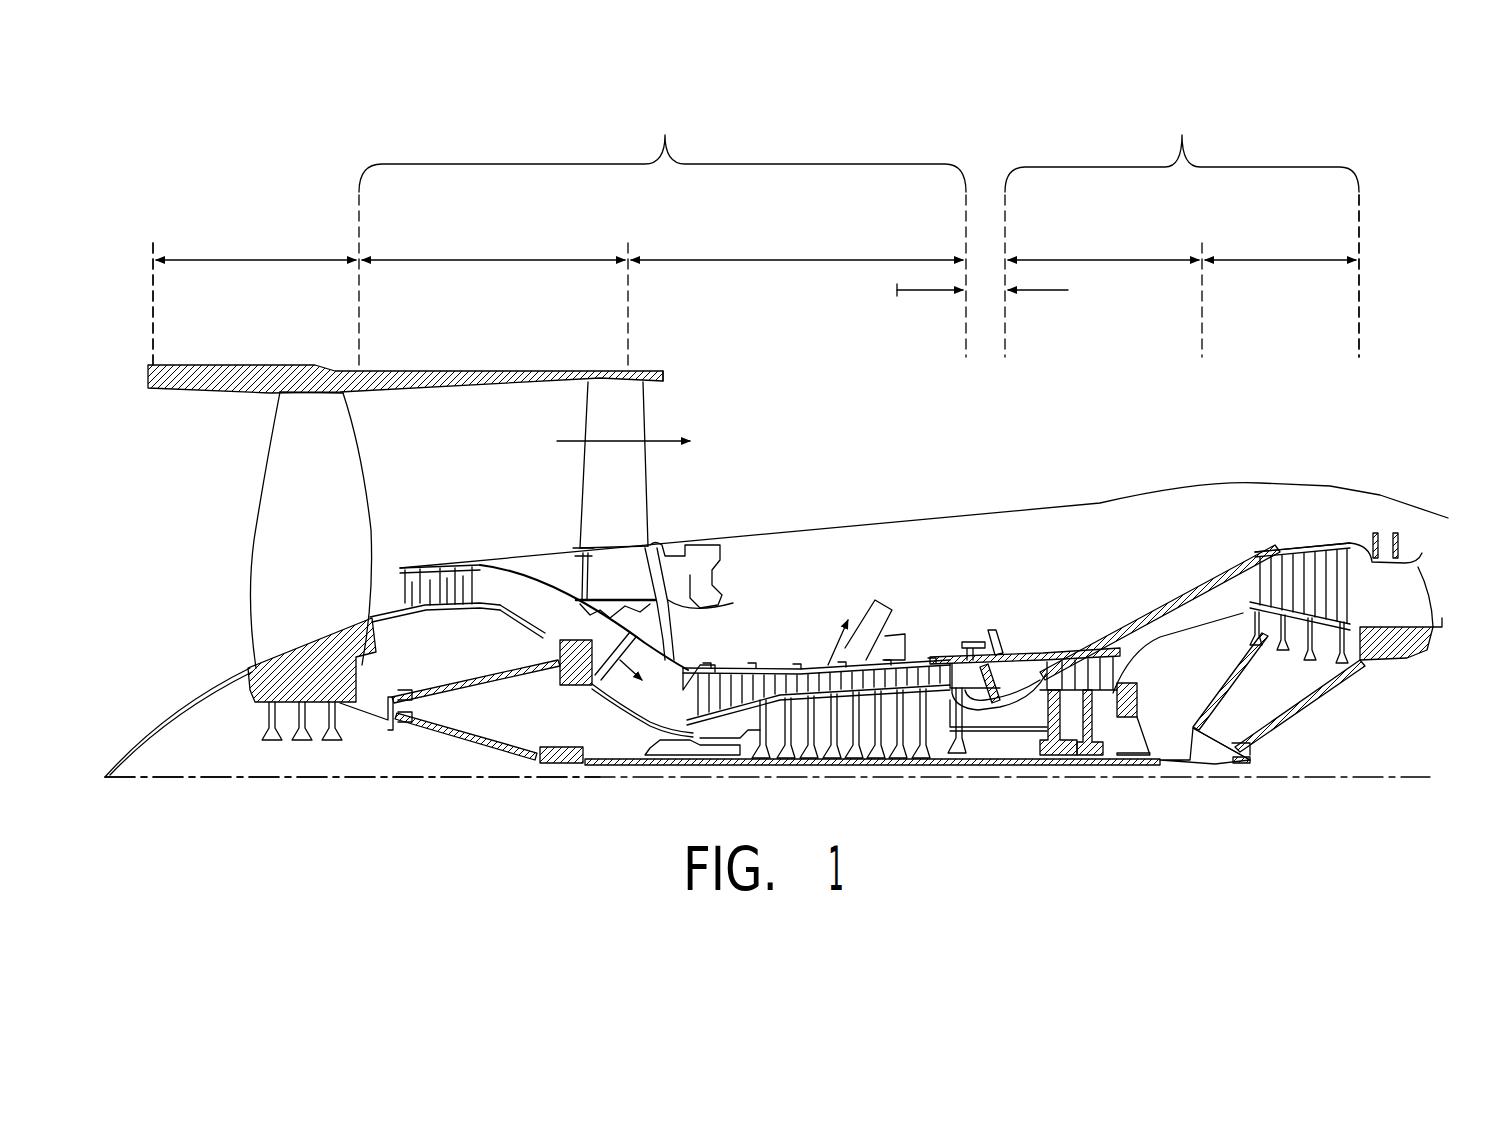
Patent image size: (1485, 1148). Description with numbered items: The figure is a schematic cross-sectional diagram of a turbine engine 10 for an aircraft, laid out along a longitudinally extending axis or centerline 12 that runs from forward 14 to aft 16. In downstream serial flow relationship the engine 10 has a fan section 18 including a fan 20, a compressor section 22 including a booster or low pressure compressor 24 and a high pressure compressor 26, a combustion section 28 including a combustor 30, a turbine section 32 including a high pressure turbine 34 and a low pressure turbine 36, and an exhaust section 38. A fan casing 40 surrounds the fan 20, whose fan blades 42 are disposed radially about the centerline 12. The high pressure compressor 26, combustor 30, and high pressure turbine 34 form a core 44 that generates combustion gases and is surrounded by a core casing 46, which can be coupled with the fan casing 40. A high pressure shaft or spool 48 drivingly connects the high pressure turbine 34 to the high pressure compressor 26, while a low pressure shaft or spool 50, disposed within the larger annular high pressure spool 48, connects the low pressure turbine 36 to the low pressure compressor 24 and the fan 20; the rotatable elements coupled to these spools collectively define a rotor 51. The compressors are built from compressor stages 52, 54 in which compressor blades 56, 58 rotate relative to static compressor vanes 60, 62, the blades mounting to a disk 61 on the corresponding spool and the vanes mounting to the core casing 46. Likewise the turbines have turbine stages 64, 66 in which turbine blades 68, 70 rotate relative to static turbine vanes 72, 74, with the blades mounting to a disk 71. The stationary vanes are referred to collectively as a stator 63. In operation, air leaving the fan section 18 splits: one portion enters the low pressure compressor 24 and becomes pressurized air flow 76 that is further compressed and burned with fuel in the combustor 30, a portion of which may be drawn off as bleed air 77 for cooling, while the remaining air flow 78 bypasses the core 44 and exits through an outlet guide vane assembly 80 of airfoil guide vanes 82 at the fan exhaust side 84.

The engine 10 is at (1372, 290).
The centerline 12 is at (235, 778).
The forward 14 is at (187, 505).
The aft 16 is at (1465, 599).
The fan section 18 is at (258, 258).
The fan 20 is at (233, 623).
The compressor section 22 is at (665, 135).
The low pressure compressor 24 is at (508, 260).
The high pressure compressor 26 is at (805, 260).
The combustion section 28 is at (912, 292).
The combustor 30 is at (993, 632).
The turbine section 32 is at (1182, 135).
The high pressure turbine 34 is at (1104, 260).
The low pressure turbine 36 is at (1282, 260).
The exhaust section 38 is at (1453, 530).
The fan casing 40 is at (392, 368).
The fan blades 42 is at (327, 437).
The core 44 is at (925, 550).
The core casing 46 is at (1187, 587).
The HP shaft or spool 48 is at (973, 752).
The LP shaft or spool 50 is at (560, 762).
The rotor 51 is at (823, 765).
The compressor stages 52 is at (478, 505).
The compressor stages 54 is at (797, 655).
The compressor blades 56 is at (437, 582).
The compressor blades 58 is at (713, 745).
The static compressor vanes 60 is at (412, 578).
The disk 61 is at (452, 608).
The static compressor vanes 62 is at (699, 687).
The stator 63 is at (700, 724).
The turbine stages 64 is at (1010, 608).
The turbine stages 66 is at (1335, 492).
The turbine blades 68 is at (1058, 665).
The turbine blades 70 is at (1342, 548).
The disk 71 is at (1072, 757).
The static turbine vanes 72 is at (1050, 676).
The static turbine vanes 74 is at (1327, 550).
The pressurized air flow 76 is at (594, 664).
The bleed air 77 is at (830, 660).
The air flow 78 is at (572, 440).
The outlet guide vane assembly 80 is at (657, 503).
The airfoil guide vanes 82 is at (592, 478).
The fan exhaust side 84 is at (665, 417).